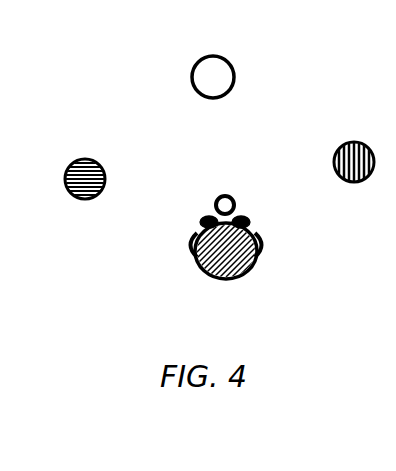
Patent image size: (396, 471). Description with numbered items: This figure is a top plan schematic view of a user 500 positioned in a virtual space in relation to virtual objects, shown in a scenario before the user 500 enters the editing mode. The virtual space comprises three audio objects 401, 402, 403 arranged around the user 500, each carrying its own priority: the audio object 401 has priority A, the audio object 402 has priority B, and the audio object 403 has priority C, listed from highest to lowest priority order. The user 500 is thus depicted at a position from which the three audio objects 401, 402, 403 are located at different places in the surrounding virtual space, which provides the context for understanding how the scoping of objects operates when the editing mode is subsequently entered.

The audio object 401 is at (80, 157).
The audio object 402 is at (209, 53).
The audio object 403 is at (348, 138).
The user 500 is at (243, 278).